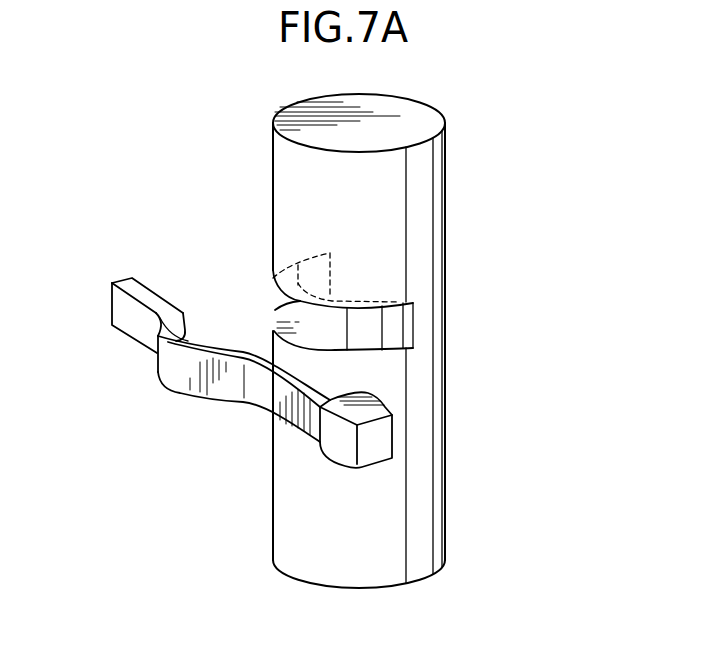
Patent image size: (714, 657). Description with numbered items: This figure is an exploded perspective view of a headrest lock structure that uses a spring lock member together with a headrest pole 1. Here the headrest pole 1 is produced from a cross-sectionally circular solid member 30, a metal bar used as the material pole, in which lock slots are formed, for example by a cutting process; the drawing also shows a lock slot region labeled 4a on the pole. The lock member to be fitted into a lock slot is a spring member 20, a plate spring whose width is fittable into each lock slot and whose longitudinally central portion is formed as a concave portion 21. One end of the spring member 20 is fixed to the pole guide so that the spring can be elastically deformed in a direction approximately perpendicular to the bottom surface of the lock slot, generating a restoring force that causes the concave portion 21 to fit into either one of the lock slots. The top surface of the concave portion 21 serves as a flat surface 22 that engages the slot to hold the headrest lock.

The headrest pole 1 is at (424, 341).
The solid member 30 is at (445, 486).
The ring member (4a/4b) 4a is at (413, 320).
The spring member 20 is at (219, 352).
The concave portion 21 is at (197, 340).
The flat surface 22 is at (157, 313).